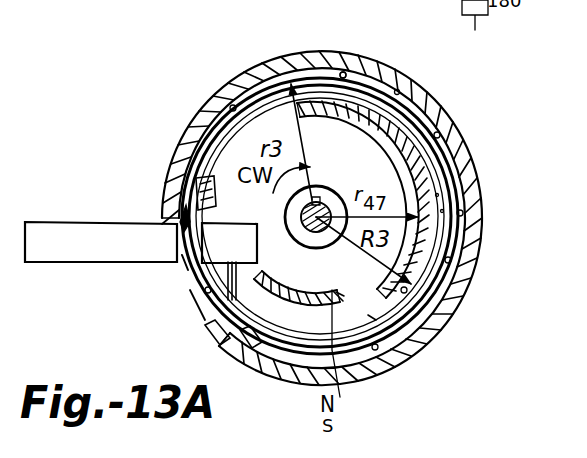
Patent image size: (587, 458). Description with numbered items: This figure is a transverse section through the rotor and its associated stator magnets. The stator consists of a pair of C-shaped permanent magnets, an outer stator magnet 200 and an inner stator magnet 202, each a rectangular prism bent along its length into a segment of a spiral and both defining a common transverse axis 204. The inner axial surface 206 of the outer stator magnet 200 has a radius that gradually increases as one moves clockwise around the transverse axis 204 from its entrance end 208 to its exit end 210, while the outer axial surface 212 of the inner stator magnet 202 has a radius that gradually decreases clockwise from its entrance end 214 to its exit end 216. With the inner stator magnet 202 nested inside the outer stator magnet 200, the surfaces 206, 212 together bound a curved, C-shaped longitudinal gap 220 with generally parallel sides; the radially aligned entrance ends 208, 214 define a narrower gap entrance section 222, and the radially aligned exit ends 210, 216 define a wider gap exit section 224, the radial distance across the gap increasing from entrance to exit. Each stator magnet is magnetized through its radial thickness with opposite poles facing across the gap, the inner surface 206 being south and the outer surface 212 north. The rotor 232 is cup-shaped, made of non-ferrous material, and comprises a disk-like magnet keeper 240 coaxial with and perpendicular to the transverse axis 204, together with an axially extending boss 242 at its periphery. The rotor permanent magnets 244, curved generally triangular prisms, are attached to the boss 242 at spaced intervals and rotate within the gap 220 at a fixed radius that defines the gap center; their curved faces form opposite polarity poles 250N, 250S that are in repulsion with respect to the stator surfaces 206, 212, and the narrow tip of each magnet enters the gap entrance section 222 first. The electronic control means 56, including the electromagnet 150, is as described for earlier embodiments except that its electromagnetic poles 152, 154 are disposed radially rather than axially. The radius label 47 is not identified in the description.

The electronic control means 56 is at (33, 218).
The electromagnet 150 is at (78, 257).
The electromagnetic pole 152 is at (175, 240).
The electromagnetic pole 154 is at (183, 240).
The outer stator magnet 200 is at (475, 129).
The inner stator magnet 202 is at (436, 194).
The transverse axis 204 is at (322, 160).
The inner axial surface 206 is at (341, 70).
The entrance end 208 is at (165, 225).
The exit end 210 is at (208, 335).
The outer axial surface 212 is at (440, 212).
The entrance end 214 is at (213, 208).
The exit end 216 is at (262, 284).
The longitudinal gap 220 is at (222, 362).
The gap entrance section 222 is at (183, 268).
The gap exit section 224 is at (203, 313).
The rotor 232 is at (400, 84).
The magnet keeper 240 is at (352, 153).
The boss 242 is at (402, 113).
The rotor permanent magnets 244 is at (325, 58).
The north magnetic pole 250N is at (340, 297).
The south magnetic pole 250S is at (370, 318).
The radius 47 is at (356, 214).